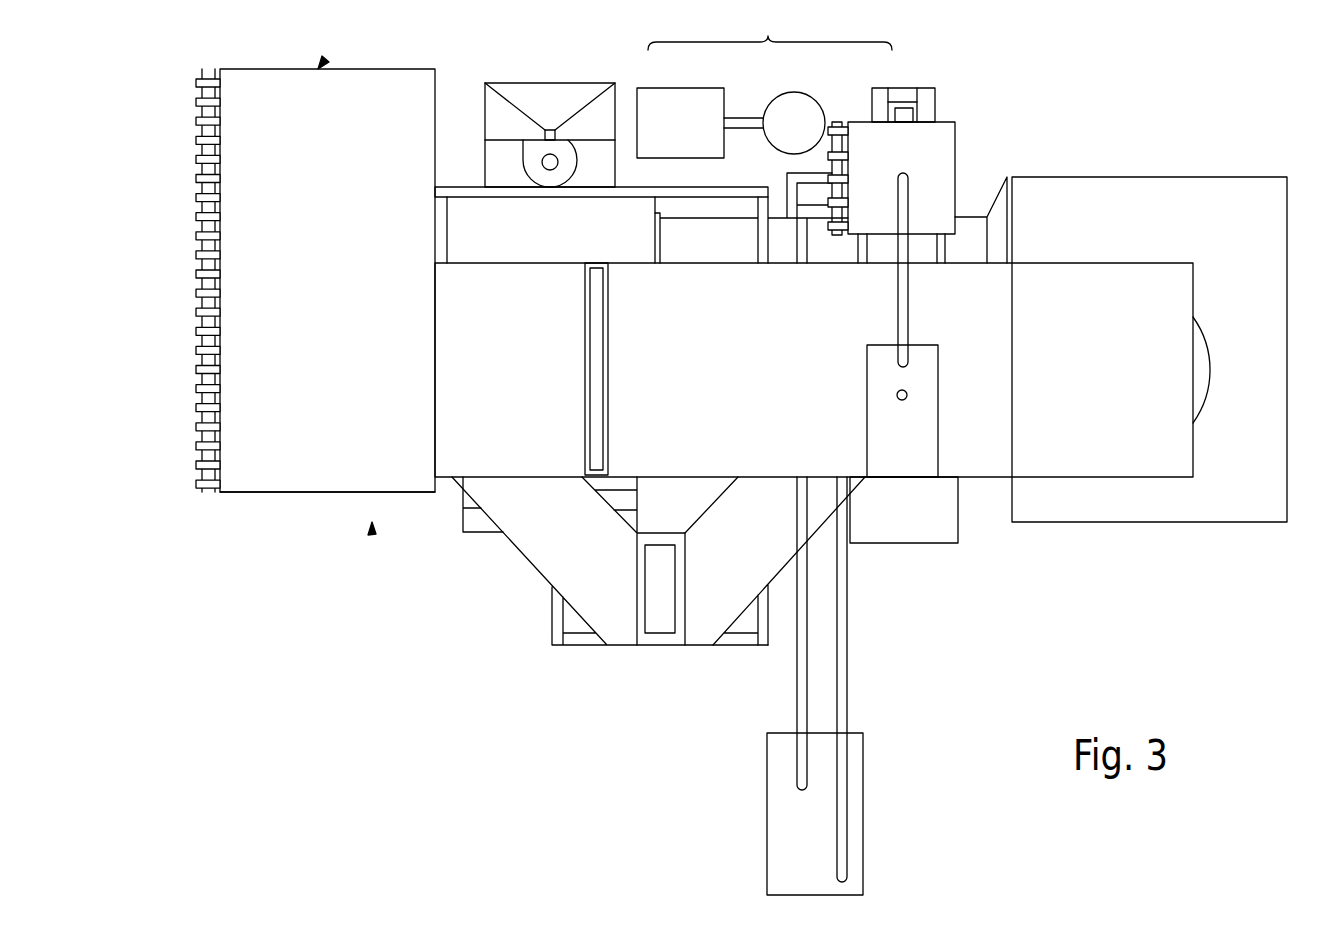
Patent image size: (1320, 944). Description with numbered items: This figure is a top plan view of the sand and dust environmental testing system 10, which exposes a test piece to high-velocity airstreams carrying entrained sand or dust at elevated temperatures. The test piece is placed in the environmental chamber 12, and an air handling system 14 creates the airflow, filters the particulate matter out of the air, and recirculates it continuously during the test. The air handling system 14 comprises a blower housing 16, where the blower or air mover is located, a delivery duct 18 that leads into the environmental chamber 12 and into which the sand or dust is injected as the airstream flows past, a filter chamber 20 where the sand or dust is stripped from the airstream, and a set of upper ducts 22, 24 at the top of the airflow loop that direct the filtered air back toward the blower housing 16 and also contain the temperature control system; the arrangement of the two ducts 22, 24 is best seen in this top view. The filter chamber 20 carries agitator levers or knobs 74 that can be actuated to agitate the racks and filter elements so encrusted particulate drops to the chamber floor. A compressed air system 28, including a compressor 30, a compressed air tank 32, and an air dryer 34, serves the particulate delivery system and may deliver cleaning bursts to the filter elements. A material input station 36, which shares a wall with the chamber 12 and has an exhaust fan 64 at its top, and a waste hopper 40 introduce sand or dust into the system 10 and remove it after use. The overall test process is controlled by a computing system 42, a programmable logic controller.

The testing system 10 is at (374, 530).
The environmental chamber 12 is at (470, 203).
The air handling system 14 is at (322, 64).
The blower housing 16 is at (1180, 192).
The delivery duct 18 is at (740, 228).
The filter chamber 20 is at (264, 478).
The upper duct 22 is at (478, 284).
The upper duct 24 is at (538, 563).
The compressed air system 28 is at (796, 133).
The compressor 30 is at (676, 100).
The compressed air tank 32 is at (788, 102).
The air dryer 34 is at (878, 95).
The material input station 36 is at (545, 92).
The waste hopper 40 is at (777, 810).
The computing system 42 is at (898, 532).
The exhaust fan 64 is at (546, 176).
The agitator levers or knobs 74 is at (196, 366).